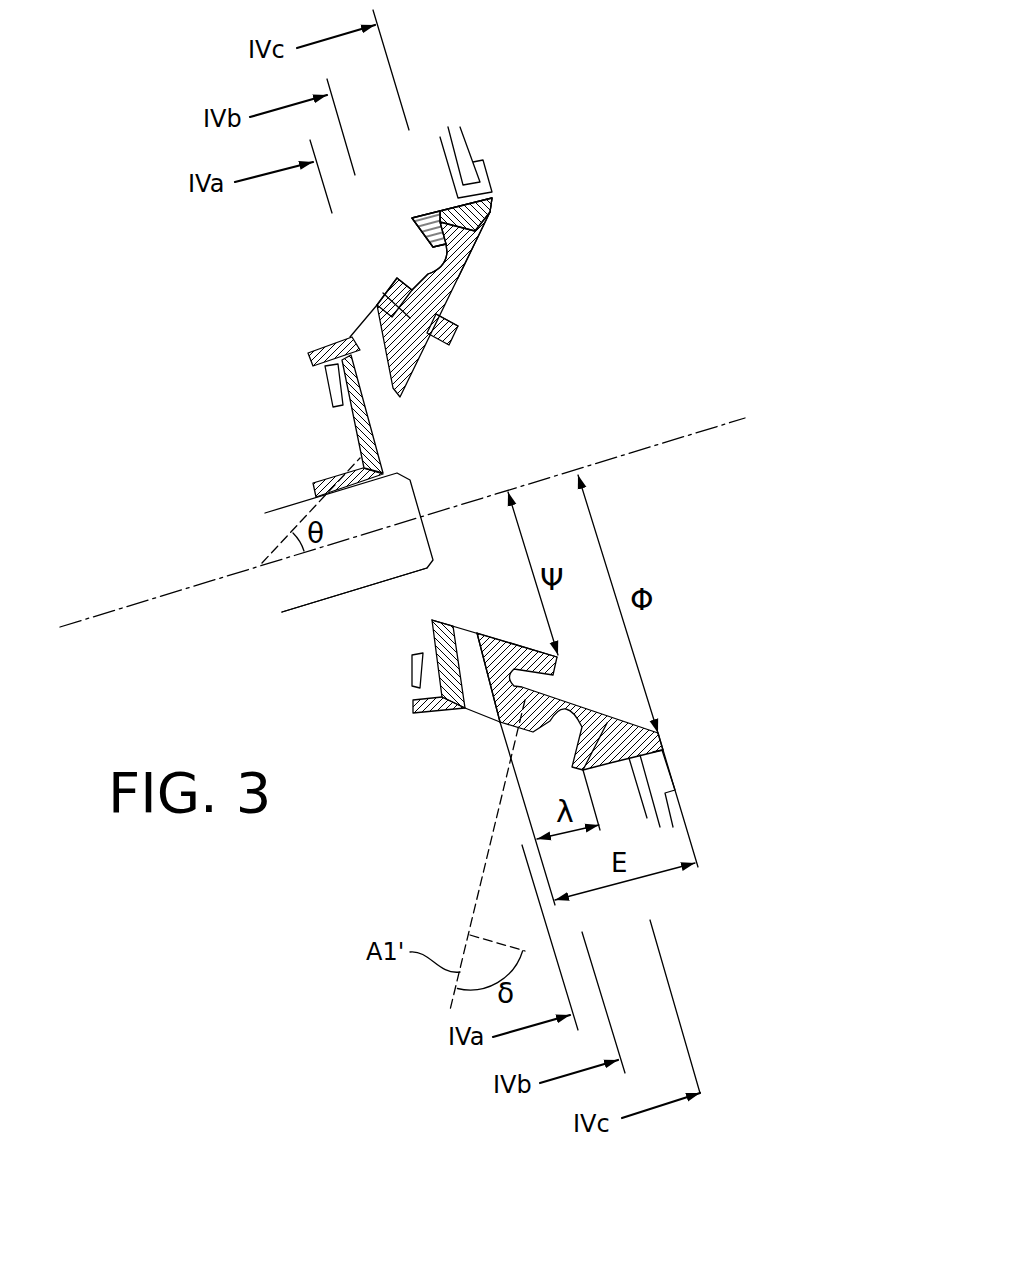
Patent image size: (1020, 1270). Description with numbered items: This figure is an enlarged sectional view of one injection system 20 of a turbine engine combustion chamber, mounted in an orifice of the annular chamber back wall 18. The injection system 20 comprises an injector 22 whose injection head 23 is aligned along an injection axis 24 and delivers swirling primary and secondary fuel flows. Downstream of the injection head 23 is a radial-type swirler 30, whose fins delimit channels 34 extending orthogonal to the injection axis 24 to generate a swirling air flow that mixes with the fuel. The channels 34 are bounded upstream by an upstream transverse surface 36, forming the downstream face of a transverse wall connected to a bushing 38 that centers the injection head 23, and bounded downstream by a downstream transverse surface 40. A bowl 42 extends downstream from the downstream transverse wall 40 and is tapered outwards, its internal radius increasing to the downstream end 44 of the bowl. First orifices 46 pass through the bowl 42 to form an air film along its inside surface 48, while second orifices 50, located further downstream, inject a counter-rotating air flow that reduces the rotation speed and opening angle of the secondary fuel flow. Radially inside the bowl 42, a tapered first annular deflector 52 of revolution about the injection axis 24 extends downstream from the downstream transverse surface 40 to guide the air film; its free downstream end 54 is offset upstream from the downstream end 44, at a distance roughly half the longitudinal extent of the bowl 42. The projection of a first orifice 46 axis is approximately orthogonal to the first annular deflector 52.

The annular chamber back wall 18 is at (660, 808).
The injection system 20 is at (276, 268).
The injector 22 is at (272, 501).
The injection head 23 is at (303, 593).
The injection axis 24 is at (736, 413).
The swirler 30 is at (474, 722).
The channels 34 is at (458, 643).
The upstream transverse surface 36 is at (326, 348).
The bushing 38 is at (320, 480).
The downstream transverse surface 40 is at (400, 392).
The bowl 42 is at (437, 263).
The downstream end of the bowl 44 is at (661, 731).
The first orifices 46 is at (396, 282).
The inside surface of the bowl 48 is at (460, 274).
The second orifices 50 is at (443, 222).
The first annular deflector 52 is at (451, 345).
The free downstream end of the first annular deflector 54 is at (455, 325).